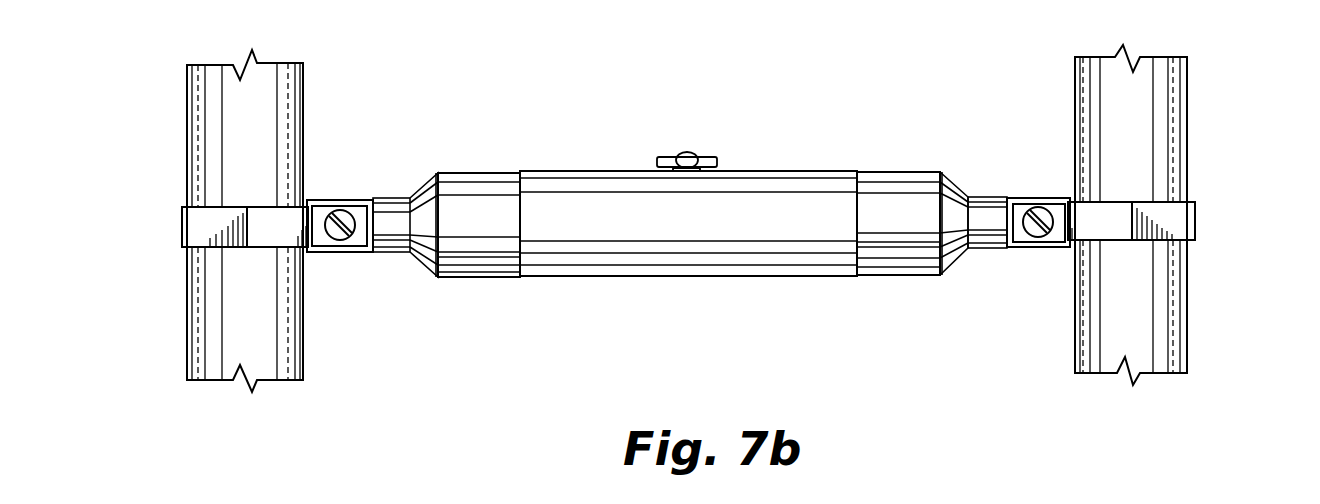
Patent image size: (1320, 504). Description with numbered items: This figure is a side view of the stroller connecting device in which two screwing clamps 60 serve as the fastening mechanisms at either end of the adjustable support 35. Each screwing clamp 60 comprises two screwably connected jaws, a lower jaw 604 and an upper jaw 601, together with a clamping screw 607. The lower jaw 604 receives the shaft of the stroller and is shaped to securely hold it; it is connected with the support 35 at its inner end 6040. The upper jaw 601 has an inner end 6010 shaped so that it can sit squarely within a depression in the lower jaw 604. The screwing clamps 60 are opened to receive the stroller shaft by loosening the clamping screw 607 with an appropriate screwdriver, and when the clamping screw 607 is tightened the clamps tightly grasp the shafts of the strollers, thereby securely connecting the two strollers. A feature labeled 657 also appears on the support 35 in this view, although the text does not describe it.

The support 35 is at (855, 338).
The locking tab 657 is at (713, 158).
The inner end of the lower jaw 6040 is at (967, 197).
The inner end of the upper jaw 6010 is at (1007, 248).
The screwing clamp 60 is at (1159, 218).
The lower jaw 604 is at (1032, 198).
The clamping screw 607 is at (1043, 238).
The upper jaw 601 is at (1195, 239).